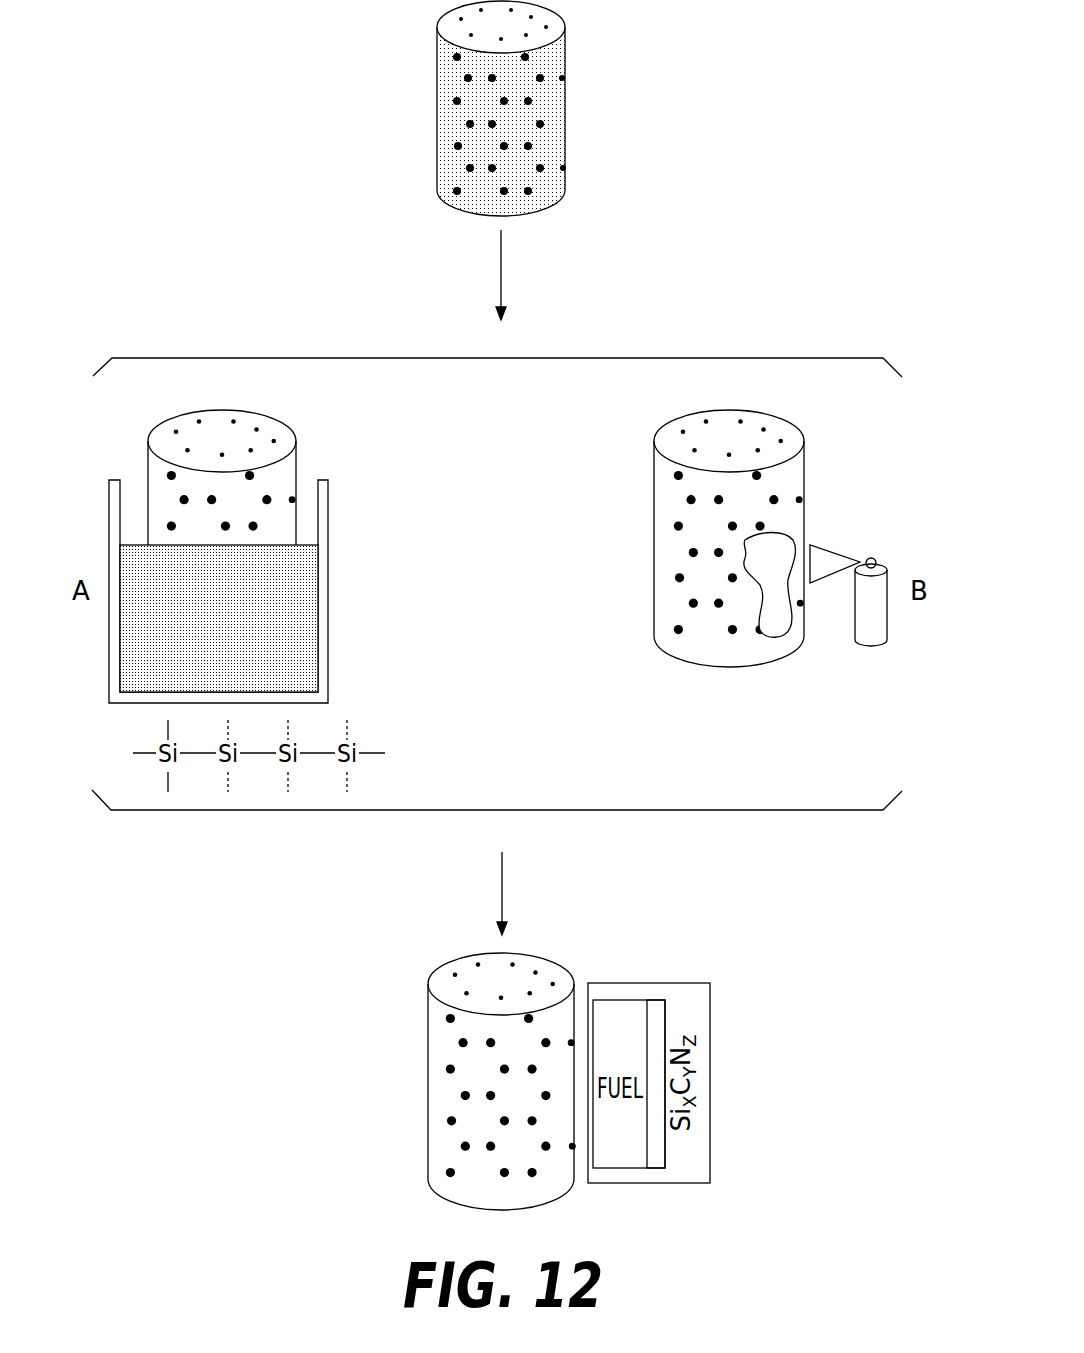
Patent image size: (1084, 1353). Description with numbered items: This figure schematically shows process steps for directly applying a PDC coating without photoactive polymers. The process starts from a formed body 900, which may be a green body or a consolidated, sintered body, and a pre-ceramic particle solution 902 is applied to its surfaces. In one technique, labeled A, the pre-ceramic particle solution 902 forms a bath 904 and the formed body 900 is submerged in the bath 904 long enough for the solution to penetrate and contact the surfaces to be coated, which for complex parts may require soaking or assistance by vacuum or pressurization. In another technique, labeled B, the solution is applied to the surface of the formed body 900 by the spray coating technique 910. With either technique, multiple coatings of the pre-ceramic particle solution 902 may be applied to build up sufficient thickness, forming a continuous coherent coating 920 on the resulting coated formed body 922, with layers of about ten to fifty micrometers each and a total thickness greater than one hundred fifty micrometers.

The formed body 900 is at (603, 50).
The pre-ceramic particle solution 902 is at (300, 677).
The bath 904 is at (328, 580).
The spray coating technique 910 is at (830, 652).
The continuous coherent coating 920 is at (655, 1010).
The coated formed body 922 is at (477, 1070).